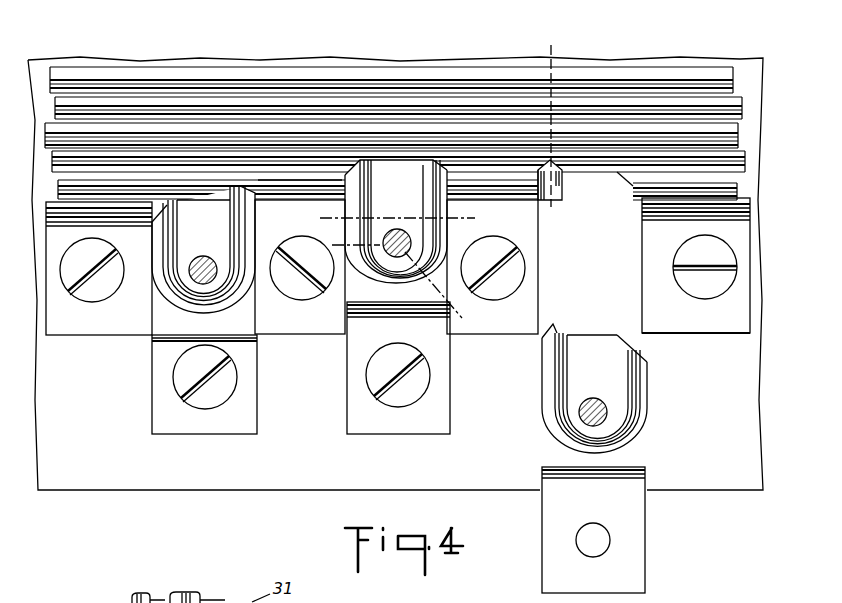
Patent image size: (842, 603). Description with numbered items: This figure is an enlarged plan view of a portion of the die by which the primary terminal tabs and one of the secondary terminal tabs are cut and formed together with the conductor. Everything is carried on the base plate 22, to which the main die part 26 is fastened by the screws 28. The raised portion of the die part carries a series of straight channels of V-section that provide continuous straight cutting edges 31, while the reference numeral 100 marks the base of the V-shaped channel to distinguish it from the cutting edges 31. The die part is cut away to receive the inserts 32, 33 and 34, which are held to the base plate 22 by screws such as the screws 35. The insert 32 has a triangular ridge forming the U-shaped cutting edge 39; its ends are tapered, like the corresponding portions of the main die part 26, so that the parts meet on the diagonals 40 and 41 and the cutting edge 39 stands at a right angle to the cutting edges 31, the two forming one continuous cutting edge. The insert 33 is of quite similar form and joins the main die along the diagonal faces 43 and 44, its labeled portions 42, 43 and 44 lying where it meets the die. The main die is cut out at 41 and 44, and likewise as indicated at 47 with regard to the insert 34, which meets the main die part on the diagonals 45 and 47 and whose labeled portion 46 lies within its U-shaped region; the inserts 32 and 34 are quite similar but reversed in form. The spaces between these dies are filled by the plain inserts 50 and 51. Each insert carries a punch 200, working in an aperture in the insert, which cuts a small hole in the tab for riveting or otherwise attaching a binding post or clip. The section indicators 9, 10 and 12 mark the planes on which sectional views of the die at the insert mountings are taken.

The section line 9- 9 is at (397, 218).
The section line 10- 10 is at (339, 280).
The section line 12- 12 is at (517, 49).
The base plate 22 is at (218, 478).
The main die part 26 is at (697, 331).
The screws 28 is at (100, 287).
The cutting edges 31 is at (350, 107).
The insert 32 is at (157, 415).
The insert 33 is at (355, 420).
The insert 34 is at (627, 512).
The screws 35 is at (207, 363).
The U-shaped cutting edge 39 is at (168, 242).
The diagonal 40 is at (168, 207).
The diagonal 41 is at (275, 176).
The clip leg 42 is at (439, 184).
The diagonal face 43 is at (367, 183).
The diagonal face 44 is at (445, 163).
The diagonal 45 is at (632, 189).
The clip lamination 46 is at (558, 373).
The diagonal 47 is at (564, 164).
The plain insert 50 is at (318, 318).
The plain insert 51 is at (515, 318).
The base of the V-shaped channel 100 is at (395, 104).
The punch 200 is at (192, 280).